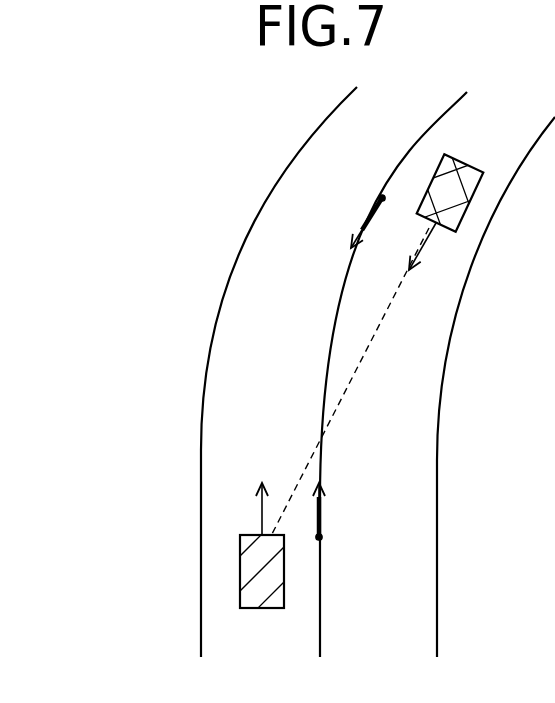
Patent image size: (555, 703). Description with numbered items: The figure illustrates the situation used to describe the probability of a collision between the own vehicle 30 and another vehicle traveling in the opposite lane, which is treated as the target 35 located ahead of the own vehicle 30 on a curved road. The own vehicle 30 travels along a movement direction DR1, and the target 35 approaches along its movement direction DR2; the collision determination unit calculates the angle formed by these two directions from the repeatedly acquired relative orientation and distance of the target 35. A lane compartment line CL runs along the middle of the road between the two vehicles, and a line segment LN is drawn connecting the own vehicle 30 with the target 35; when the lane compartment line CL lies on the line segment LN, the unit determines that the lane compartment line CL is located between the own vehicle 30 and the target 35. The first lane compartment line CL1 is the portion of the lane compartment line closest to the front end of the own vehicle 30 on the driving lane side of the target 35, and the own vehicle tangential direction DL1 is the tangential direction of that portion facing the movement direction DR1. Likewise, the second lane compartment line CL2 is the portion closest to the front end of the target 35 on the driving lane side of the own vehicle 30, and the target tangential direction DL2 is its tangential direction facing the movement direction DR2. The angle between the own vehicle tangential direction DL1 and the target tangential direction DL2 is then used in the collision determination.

The own vehicle 30 is at (262, 608).
The target 35 is at (465, 160).
The lane compartment line CL is at (336, 320).
The first lane compartment line CL1 is at (321, 536).
The second lane compartment line CL2 is at (380, 196).
The own vehicle tangential direction DL1 is at (321, 503).
The target tangential direction DL2 is at (366, 224).
The movement direction of the own vehicle DR1 is at (263, 496).
The movement direction of the target DR2 is at (420, 252).
The line segment LN is at (377, 361).